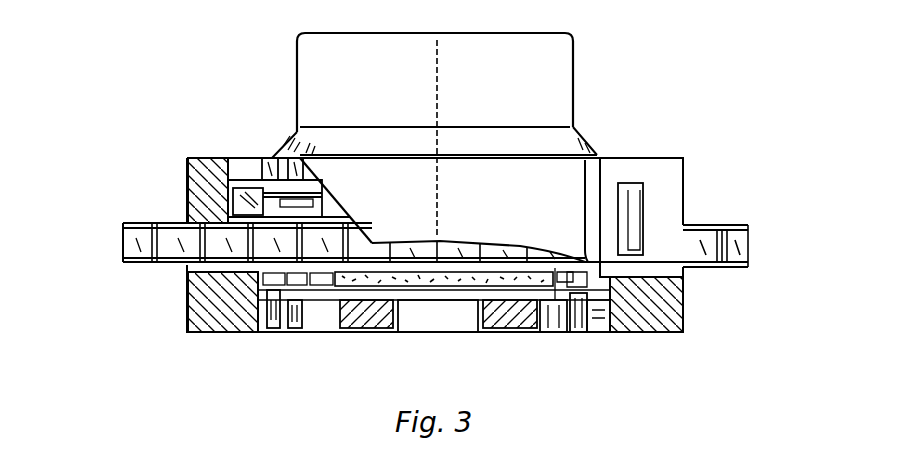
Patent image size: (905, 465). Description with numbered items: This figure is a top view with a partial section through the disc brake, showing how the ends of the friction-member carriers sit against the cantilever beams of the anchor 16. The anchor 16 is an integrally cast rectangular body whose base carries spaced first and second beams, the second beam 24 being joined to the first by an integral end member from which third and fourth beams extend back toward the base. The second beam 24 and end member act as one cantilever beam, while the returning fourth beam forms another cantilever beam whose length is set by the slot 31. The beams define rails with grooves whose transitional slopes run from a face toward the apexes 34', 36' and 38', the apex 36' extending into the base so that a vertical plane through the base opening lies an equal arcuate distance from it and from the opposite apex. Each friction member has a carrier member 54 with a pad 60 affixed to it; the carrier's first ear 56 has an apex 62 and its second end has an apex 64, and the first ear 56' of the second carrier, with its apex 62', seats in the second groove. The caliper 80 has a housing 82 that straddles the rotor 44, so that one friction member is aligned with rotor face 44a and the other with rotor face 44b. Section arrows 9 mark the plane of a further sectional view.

The anchor 16 is at (686, 166).
The second beam 24 is at (670, 203).
The slot 31 is at (636, 205).
The apex 34' is at (399, 336).
The apex 36' is at (269, 160).
The apex 38' is at (597, 345).
The rotor 44 is at (738, 247).
The rotor face 44a is at (703, 273).
The rotor face 44b is at (722, 227).
The carrier member 54 is at (447, 292).
The first ear 56 is at (317, 360).
The first ear 56' is at (309, 191).
The pad 60 is at (470, 333).
The apex 62 is at (284, 349).
The upper pin 62' is at (266, 114).
The apex 64 is at (620, 297).
The caliper 80 is at (593, 63).
The housing 82 is at (517, 140).
The section line 9- 9 is at (107, 300).